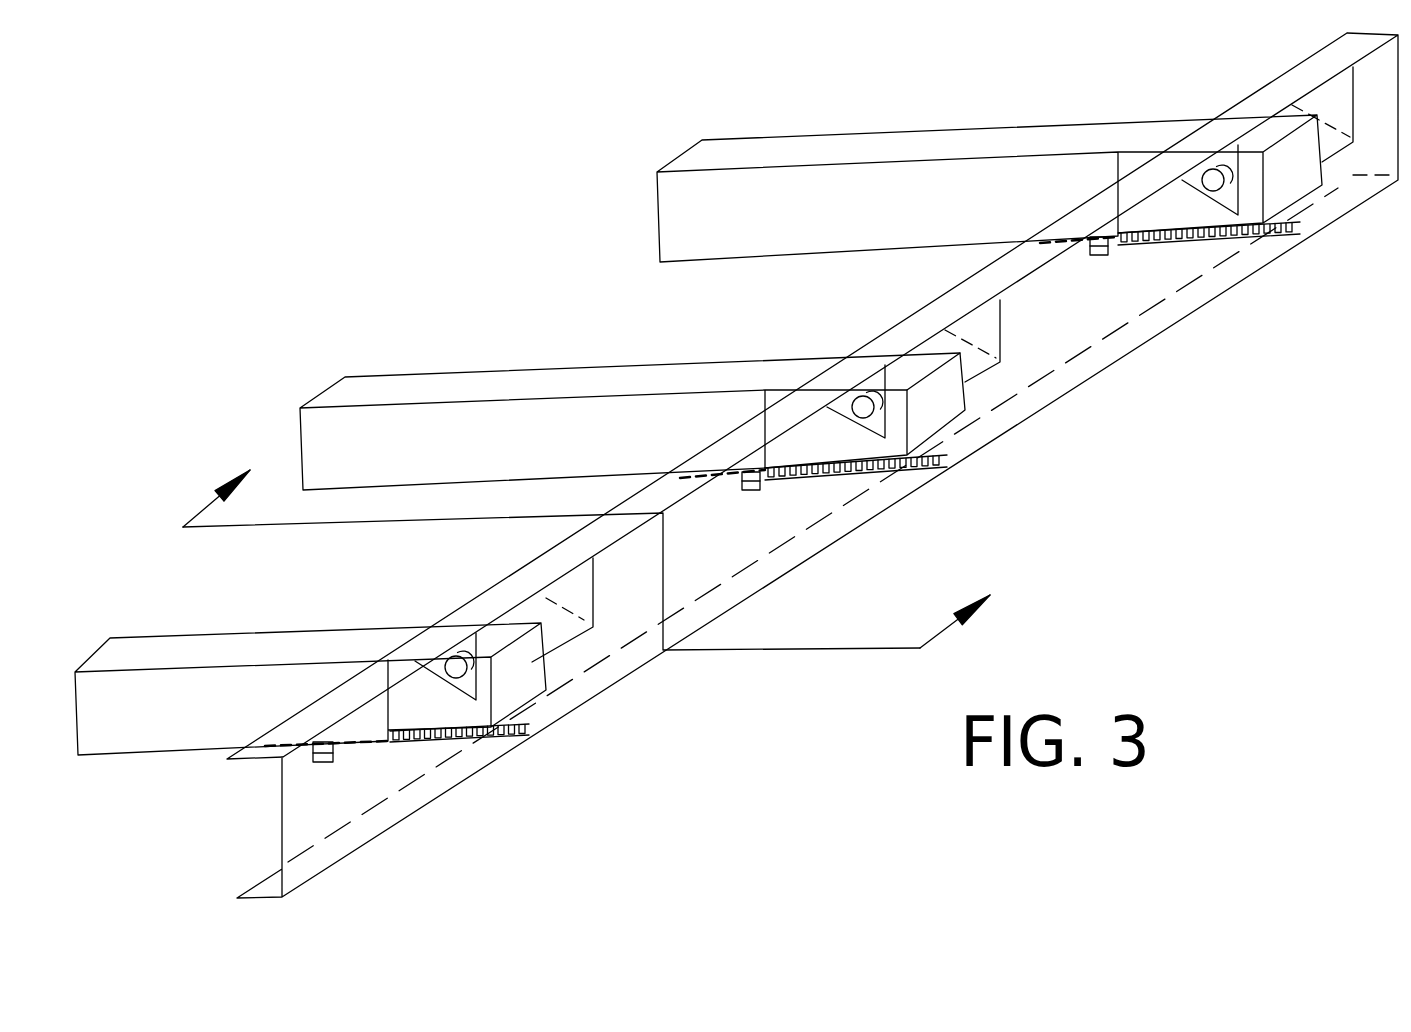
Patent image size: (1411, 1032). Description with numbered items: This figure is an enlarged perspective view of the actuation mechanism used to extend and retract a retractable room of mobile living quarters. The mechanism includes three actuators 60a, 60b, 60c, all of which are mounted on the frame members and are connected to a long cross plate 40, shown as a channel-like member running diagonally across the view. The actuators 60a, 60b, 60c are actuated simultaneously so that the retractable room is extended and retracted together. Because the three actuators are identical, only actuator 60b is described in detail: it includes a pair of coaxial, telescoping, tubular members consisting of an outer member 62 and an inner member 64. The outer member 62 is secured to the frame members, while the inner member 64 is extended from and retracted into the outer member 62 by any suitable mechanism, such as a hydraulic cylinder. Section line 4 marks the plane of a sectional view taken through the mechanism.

The cross plate 40 is at (1088, 318).
The actuator 60a is at (220, 632).
The actuator 60b is at (632, 366).
The actuator 60c is at (888, 145).
The outer member 62 is at (690, 372).
The inner member 64 is at (822, 356).
The section line 4- 4 is at (595, 539).